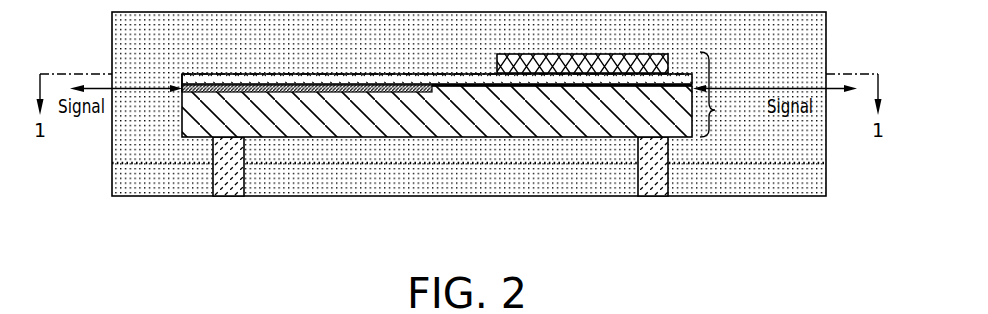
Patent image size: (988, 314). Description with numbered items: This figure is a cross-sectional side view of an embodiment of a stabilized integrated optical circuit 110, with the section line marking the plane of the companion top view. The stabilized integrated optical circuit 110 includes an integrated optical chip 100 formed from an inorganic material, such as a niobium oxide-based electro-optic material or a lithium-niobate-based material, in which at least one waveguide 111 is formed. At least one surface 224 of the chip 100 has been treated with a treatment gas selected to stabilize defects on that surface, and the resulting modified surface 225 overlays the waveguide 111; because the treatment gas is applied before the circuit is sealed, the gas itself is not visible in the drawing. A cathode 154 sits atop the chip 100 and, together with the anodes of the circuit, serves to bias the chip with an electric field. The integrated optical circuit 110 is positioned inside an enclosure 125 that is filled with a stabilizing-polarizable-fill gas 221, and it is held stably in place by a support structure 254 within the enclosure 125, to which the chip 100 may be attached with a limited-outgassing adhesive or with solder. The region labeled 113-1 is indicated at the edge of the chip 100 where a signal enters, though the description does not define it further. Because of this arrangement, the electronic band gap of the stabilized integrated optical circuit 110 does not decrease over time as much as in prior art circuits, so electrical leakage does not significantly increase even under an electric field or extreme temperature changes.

The integrated optical chip 100 is at (488, 126).
The stabilized integrated optical circuit 110 is at (722, 94).
The waveguide 111 is at (282, 85).
The first terminal 113-1 is at (182, 88).
The enclosure 125 is at (412, 197).
The cathode 154 is at (561, 55).
The stabilizing-polarizable-fill gas 221 is at (173, 174).
The surface 224 is at (483, 86).
The modified surface 225 is at (390, 74).
The structure 254 is at (237, 197).